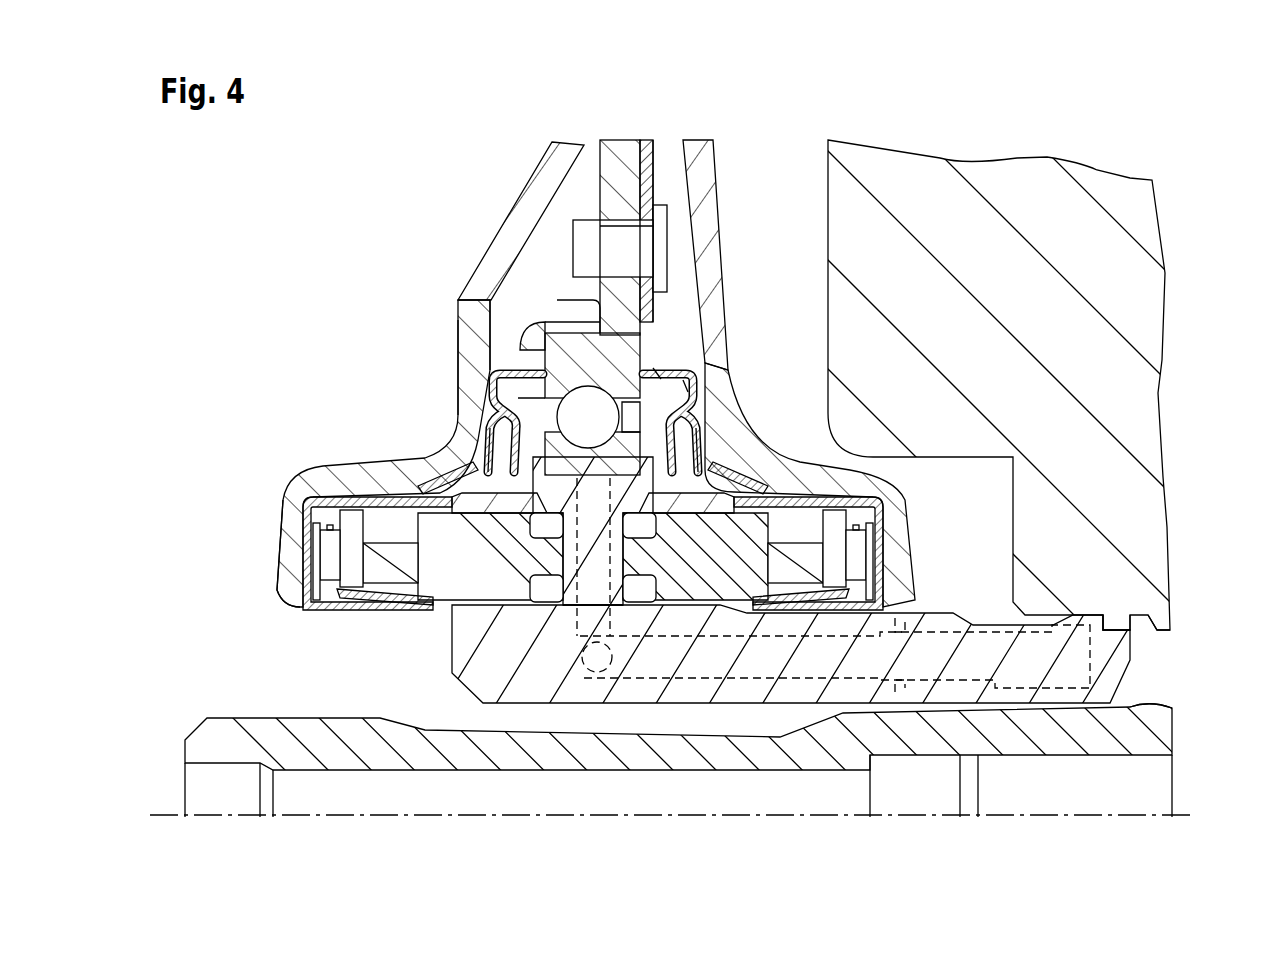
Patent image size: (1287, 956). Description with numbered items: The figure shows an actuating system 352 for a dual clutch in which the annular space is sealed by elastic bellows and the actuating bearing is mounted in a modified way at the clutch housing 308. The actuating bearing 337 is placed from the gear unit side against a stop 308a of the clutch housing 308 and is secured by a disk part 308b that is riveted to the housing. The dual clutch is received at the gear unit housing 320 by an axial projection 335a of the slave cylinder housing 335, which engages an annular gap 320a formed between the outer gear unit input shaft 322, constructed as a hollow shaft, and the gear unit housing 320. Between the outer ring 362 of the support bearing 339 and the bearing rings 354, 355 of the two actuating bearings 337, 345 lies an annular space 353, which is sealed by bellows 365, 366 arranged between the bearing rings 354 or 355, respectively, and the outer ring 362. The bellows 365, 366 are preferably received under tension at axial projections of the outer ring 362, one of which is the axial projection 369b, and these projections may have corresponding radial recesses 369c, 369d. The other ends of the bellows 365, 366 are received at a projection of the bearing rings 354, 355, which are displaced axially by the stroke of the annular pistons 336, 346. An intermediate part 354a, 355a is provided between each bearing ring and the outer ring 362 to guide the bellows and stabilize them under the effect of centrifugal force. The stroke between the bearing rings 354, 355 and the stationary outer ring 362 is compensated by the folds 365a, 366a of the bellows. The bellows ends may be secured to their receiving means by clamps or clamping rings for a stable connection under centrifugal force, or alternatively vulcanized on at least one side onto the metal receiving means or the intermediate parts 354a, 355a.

The clutch housing 308 is at (617, 160).
The stop 308a is at (583, 355).
The disk part 308b is at (653, 322).
The gear unit housing 320 is at (970, 337).
The annular gap 320a is at (1140, 683).
The outer gear unit input shaft 322 is at (963, 736).
The slave cylinder housing 335 is at (560, 680).
The axial projection 335a is at (1088, 642).
The annular piston 336 is at (483, 565).
The actuating bearing 337 is at (290, 587).
The support bearing 339 is at (617, 318).
The actuating bearing 345 is at (897, 543).
The annular piston 346 is at (703, 557).
The actuating system 352 is at (968, 146).
The annular space 353 is at (468, 352).
The bearing ring 354 is at (330, 468).
The intermediate part 354a is at (452, 442).
The bearing ring 355 is at (890, 517).
The intermediate part 355a is at (712, 474).
The outer ring 362 is at (552, 305).
The bellows 365 is at (490, 372).
The fold 365a is at (475, 411).
The bellows 366 is at (697, 382).
The fold 366a is at (709, 405).
The axial projection 369b is at (660, 365).
The radial recess 369c is at (500, 372).
The radial recess 369d is at (688, 390).